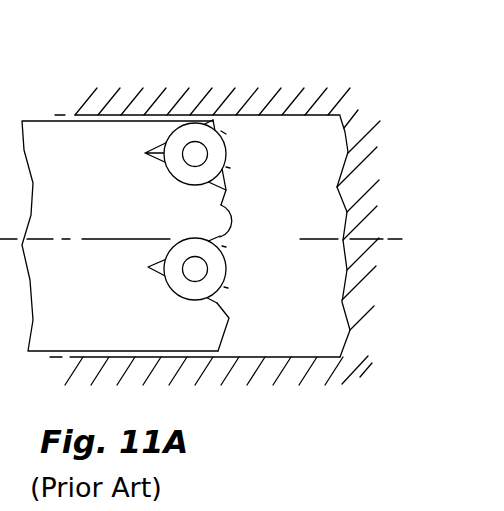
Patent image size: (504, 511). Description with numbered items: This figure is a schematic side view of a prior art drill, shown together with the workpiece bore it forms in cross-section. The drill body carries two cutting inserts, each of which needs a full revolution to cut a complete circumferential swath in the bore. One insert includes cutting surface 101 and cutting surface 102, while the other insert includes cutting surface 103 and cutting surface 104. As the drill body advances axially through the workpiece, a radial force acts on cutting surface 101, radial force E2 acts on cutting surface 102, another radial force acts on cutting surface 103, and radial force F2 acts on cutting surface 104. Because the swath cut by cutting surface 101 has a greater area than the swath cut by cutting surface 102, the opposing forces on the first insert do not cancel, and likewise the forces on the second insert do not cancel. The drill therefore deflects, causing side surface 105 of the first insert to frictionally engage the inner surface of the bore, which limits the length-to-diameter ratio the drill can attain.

The cutting surface 101 is at (222, 118).
The cutting surface 102 is at (228, 168).
The cutting surface 103 is at (222, 205).
The cutting surface 104 is at (226, 288).
The side surface 105 is at (213, 121).
The radial force E2 is at (228, 168).
The radial force F2 is at (226, 287).